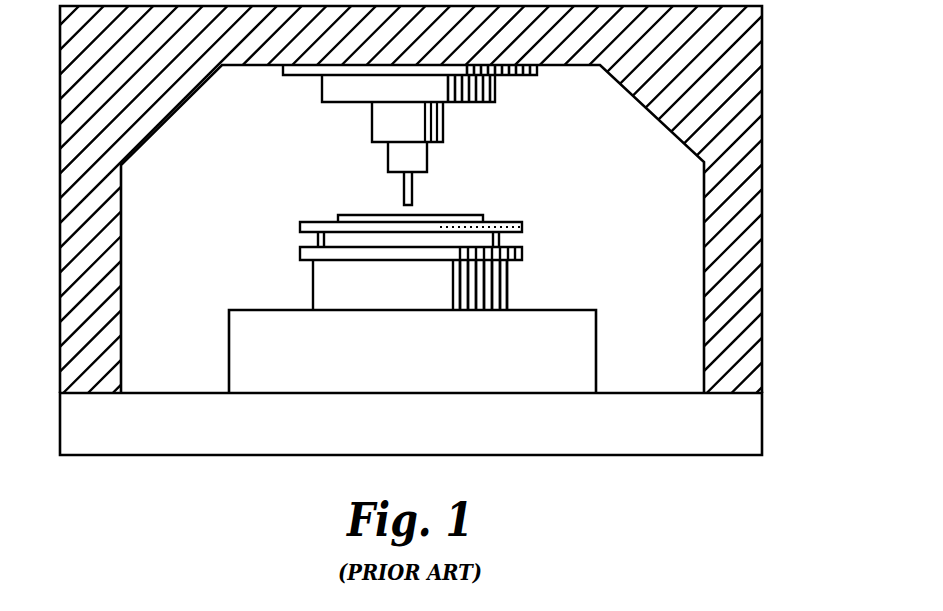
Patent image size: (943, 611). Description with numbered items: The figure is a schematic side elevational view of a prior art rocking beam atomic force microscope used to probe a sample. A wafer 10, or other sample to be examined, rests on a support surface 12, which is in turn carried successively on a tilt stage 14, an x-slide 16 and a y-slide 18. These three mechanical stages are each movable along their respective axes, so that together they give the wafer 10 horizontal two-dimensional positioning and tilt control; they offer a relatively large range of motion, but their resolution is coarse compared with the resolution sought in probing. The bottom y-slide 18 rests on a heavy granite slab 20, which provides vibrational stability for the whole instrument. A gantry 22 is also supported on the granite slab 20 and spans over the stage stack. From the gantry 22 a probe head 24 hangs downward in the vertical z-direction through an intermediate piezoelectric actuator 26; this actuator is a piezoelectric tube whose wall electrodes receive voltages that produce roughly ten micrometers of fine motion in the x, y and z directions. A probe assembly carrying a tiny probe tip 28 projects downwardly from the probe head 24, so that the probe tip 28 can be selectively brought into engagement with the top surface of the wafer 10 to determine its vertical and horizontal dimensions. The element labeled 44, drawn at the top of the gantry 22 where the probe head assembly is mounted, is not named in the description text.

The wafer 10 is at (362, 210).
The support surface 12 is at (298, 227).
The tilt stage 14 is at (298, 252).
The x-slide 16 is at (312, 281).
The y-slide 18 is at (228, 344).
The granite slab 20 is at (762, 418).
The gantry 22 is at (762, 57).
The probe head 24 is at (427, 159).
The piezoelectric actuator 26 is at (443, 128).
The probe tip 28 is at (413, 188).
The mounting plate 44 is at (517, 76).